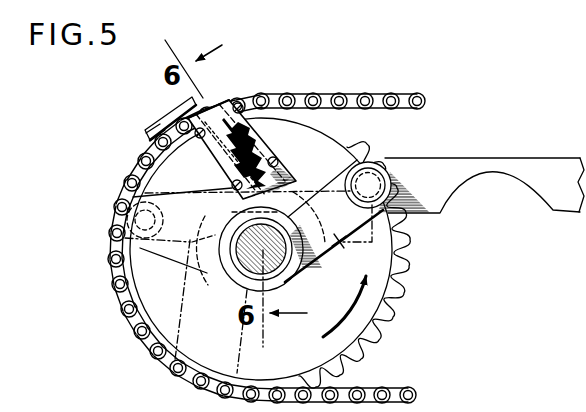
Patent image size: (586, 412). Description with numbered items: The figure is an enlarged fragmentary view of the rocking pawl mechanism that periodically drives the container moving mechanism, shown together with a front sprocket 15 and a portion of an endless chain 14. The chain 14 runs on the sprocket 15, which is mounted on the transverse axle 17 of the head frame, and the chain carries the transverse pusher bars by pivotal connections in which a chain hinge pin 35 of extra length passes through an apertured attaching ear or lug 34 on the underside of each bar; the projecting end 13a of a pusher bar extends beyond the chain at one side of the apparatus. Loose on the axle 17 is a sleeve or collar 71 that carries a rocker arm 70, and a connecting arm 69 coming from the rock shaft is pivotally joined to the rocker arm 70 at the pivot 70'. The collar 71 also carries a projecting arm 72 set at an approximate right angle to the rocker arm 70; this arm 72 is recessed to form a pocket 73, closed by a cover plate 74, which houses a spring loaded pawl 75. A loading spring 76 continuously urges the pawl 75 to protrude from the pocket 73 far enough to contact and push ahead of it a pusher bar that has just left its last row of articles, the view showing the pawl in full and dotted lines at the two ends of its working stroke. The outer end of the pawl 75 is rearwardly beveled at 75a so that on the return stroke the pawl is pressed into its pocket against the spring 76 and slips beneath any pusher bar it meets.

The endless chain 14 is at (337, 81).
The front sprocket 15 is at (366, 138).
The axle 17 is at (291, 284).
The attaching apertured ear or lug 34 is at (178, 107).
The projecting end of pusher bar 13a is at (163, 113).
The hinge pin 35 is at (146, 139).
The connecting arm 69 is at (452, 172).
The rocker arm 70 is at (352, 237).
The pivotal connection 70' is at (396, 174).
The sleeve or collar 71 is at (242, 276).
The projecting arm 72 is at (300, 173).
The pocket 73 is at (276, 150).
The cover plate 74 is at (212, 155).
The spring loaded pawl 75 is at (240, 92).
The bevel 75a is at (204, 92).
The loading spring 76 is at (224, 181).